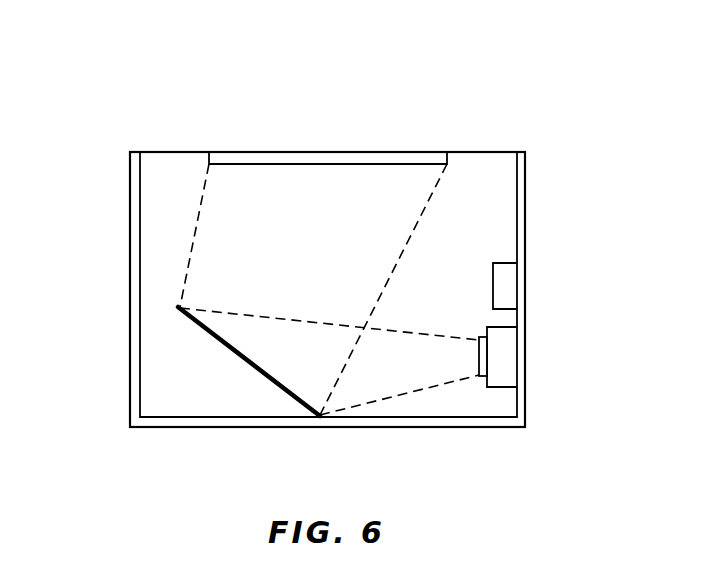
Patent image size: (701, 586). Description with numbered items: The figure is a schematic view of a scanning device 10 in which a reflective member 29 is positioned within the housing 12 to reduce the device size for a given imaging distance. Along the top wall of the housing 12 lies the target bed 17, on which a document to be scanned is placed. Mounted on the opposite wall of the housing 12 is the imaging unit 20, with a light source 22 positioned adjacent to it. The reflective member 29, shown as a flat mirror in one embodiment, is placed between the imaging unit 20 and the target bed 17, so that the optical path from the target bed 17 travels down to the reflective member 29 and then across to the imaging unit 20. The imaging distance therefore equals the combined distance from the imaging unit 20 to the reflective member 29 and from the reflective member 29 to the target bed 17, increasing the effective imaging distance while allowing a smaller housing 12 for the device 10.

The scanning device 10 is at (213, 92).
The housing 12 is at (527, 223).
The target bed 17 is at (417, 153).
The imaging unit 20 is at (500, 360).
The light source 22 is at (500, 286).
The reflective member 29 is at (200, 338).